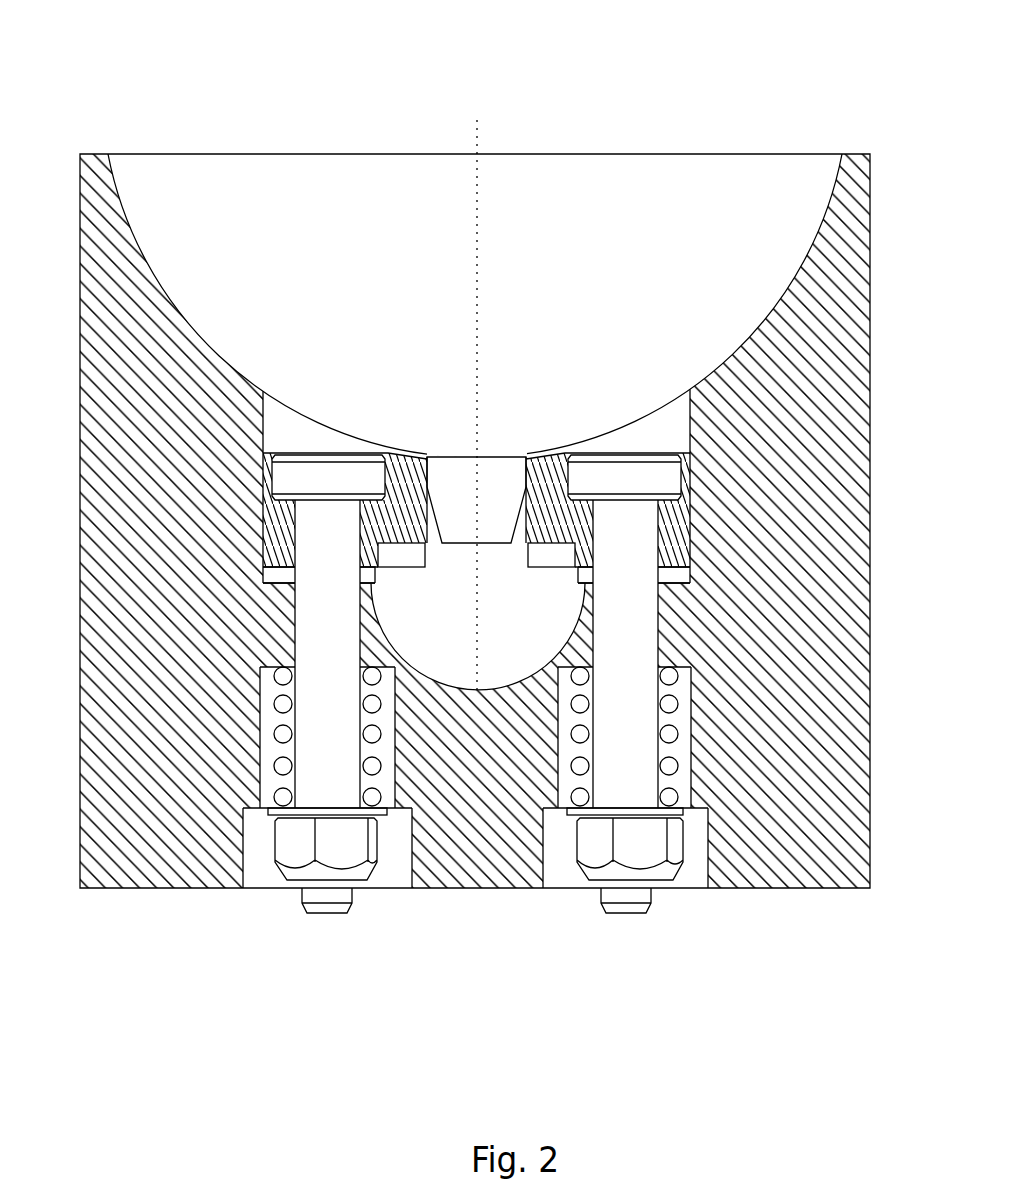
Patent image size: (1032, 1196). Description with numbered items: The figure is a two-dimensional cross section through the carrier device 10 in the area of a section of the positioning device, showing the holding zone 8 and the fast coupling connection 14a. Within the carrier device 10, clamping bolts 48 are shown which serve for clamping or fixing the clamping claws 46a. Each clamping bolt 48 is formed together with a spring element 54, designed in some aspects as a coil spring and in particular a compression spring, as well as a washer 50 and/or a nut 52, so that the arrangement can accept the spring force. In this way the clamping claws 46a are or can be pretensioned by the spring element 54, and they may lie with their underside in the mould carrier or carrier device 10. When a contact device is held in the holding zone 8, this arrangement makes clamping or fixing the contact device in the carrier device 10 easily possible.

The holding zone 8 is at (780, 209).
The carrier device 10 is at (128, 876).
The fast coupling connection 14a is at (437, 635).
The clamping claw 46a is at (413, 472).
The clamping bolt 48 is at (635, 723).
The washer 50 is at (683, 813).
The nut 52 is at (613, 815).
The spring element 54 is at (580, 773).